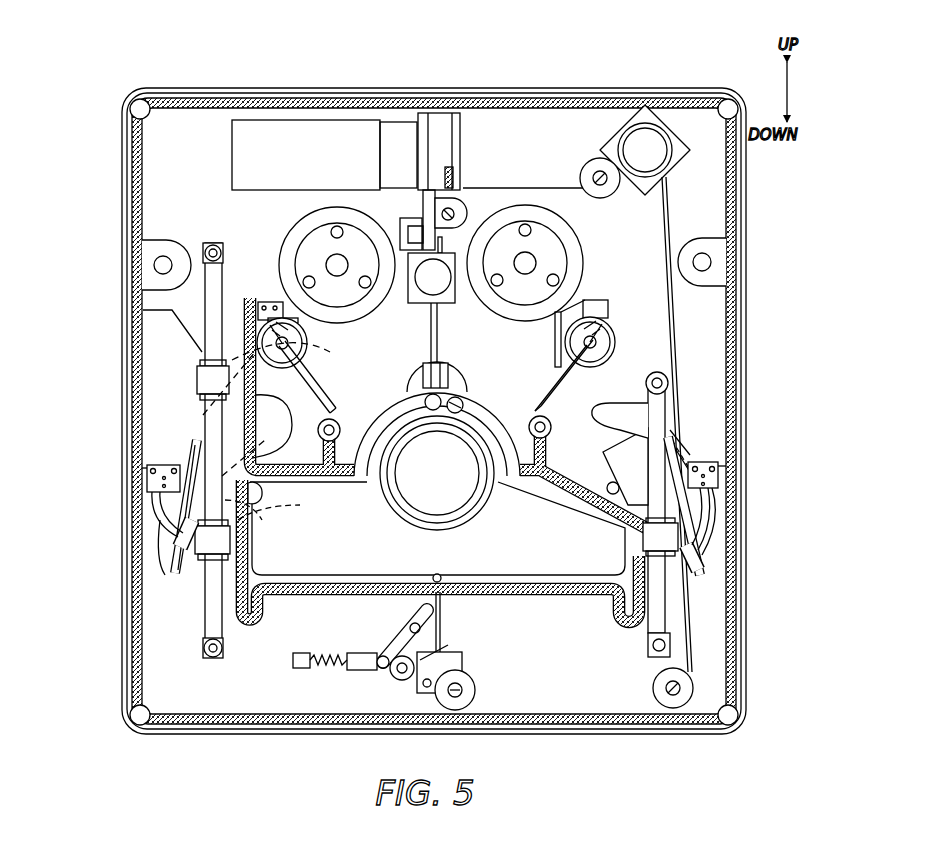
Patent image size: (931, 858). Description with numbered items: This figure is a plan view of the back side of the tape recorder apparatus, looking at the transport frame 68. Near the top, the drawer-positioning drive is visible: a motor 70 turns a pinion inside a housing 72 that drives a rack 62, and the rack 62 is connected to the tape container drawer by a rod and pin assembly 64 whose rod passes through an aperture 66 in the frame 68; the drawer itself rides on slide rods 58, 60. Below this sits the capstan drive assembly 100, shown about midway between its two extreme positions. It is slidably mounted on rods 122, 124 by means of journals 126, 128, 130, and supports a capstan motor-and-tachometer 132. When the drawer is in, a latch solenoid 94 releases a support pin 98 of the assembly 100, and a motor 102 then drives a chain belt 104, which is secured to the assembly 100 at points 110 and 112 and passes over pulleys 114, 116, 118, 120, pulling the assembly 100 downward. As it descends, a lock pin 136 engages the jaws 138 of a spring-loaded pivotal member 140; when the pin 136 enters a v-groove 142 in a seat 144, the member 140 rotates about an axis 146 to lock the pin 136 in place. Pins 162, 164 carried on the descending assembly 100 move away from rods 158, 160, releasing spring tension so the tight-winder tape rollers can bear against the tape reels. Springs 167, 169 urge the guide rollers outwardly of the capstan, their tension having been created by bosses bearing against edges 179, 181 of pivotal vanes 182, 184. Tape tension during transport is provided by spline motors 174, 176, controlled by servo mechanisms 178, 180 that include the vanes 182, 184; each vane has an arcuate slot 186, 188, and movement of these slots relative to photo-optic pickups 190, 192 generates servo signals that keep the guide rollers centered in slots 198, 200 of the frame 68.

The slide rod 58 is at (712, 262).
The slide rod 60 is at (156, 262).
The rack 62 is at (455, 170).
The rod and pin assembly 64 is at (455, 214).
The aperture 66 is at (408, 220).
The transport frame 68 is at (758, 586).
The motor 70 is at (324, 155).
The housing 72 is at (448, 143).
The latch solenoid 94 is at (420, 296).
The support pin 98 is at (448, 377).
The capstan drive assembly 100 is at (444, 405).
The motor 102 is at (645, 150).
The chain belt 104 is at (671, 222).
The securing point 110 is at (421, 360).
The securing point 112 is at (448, 598).
The pulley 114 is at (462, 200).
The pulley 116 is at (590, 170).
The pulley 118 is at (653, 688).
The pulley 120 is at (476, 690).
The rod 122 is at (218, 292).
The rod 124 is at (666, 396).
The journal 126 is at (197, 380).
The journal 128 is at (206, 548).
The journal 130 is at (643, 537).
The capstan motor-and-tachometer 132 is at (437, 446).
The lock pin 136 is at (436, 573).
The jaws 138 is at (421, 612).
The pivotal member 140 is at (378, 673).
The v-groove 142 is at (447, 651).
The seat 144 is at (462, 664).
The axis 146 is at (402, 640).
The rod 158 is at (548, 393).
The rod 160 is at (320, 394).
The pin 162 is at (531, 424).
The pin 164 is at (338, 424).
The spring 167 is at (255, 465).
The spring 169 is at (686, 452).
The spline motor 174 is at (548, 250).
The spline motor 176 is at (310, 245).
The mechanism 178 is at (722, 520).
The edge 179 is at (250, 505).
The mechanism 180 is at (172, 448).
The edge 181 is at (696, 560).
The pivotal vane 182 is at (626, 465).
The pivotal vane 184 is at (255, 446).
The arcuate slot 186 is at (725, 503).
The arcuate slot 188 is at (180, 547).
The photo-optic pickup 190 is at (700, 476).
The photo-optic pickup 192 is at (146, 470).
The slot 198 is at (267, 420).
The slot 200 is at (606, 414).